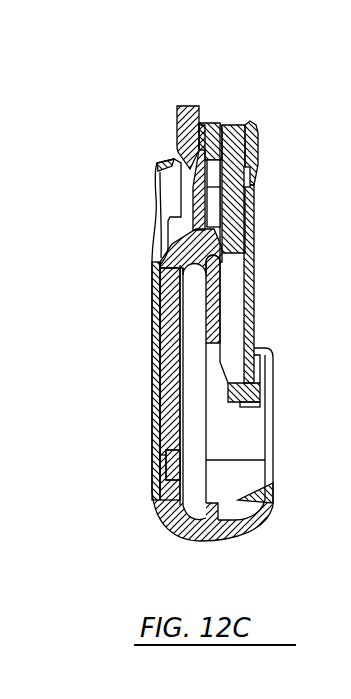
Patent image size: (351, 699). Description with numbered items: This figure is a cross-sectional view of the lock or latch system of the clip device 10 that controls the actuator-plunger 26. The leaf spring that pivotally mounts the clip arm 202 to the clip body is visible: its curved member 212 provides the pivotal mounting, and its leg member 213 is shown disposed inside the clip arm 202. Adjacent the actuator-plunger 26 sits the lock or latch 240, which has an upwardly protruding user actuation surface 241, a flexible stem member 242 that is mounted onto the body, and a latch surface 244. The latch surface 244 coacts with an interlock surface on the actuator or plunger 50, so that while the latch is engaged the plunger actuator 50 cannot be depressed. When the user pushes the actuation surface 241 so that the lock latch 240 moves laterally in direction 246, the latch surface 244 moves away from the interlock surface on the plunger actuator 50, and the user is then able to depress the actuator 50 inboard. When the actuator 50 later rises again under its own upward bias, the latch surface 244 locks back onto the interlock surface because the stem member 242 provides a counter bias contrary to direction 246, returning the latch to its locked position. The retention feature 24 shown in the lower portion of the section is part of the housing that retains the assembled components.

The electrical connector 10 is at (122, 426).
The latch 24 is at (265, 368).
The actuator-plunger 26 is at (250, 213).
The actuator or plunger 50 is at (248, 128).
The clip arm 202 is at (152, 338).
The curved member 212 is at (167, 282).
The leg member 213 is at (155, 447).
The lock or latch 240 is at (177, 127).
The user actuation surface 241 is at (200, 117).
The flexible stem member 242 is at (178, 175).
The latch surface 244 is at (224, 135).
The direction 246 is at (188, 78).